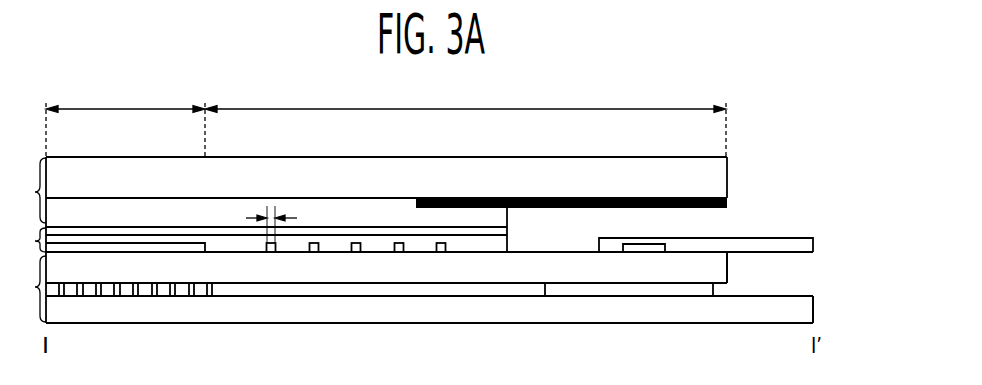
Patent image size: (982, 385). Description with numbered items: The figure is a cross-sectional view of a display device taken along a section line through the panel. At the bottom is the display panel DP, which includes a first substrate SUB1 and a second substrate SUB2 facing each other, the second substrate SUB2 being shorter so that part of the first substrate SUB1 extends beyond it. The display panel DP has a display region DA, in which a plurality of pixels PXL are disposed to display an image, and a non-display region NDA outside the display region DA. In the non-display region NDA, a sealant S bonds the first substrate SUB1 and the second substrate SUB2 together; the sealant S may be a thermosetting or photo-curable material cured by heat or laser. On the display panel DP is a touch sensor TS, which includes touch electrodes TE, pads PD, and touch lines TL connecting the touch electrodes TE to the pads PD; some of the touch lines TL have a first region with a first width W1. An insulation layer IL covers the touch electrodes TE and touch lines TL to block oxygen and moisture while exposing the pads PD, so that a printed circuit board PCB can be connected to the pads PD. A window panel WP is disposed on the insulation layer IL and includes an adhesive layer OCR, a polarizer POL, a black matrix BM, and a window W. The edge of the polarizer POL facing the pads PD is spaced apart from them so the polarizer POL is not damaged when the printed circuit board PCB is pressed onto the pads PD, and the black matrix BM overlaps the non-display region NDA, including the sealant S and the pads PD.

The window panel WP is at (27, 190).
The touch sensor TS is at (27, 241).
The display panel DP is at (27, 289).
The display region DA is at (125, 121).
The non-display region NDA is at (465, 121).
The adhesive layer OCR is at (152, 213).
The first width W1 is at (271, 208).
The polarizer POL is at (357, 231).
The insulation layer IL is at (411, 243).
The pad PD is at (644, 246).
The window W is at (727, 172).
The black matrix BM is at (727, 205).
The printed circuit board PCB is at (813, 245).
The second substrate SUB2 is at (727, 268).
The first substrate SUB1 is at (813, 310).
The touch electrode TE is at (122, 253).
The pixel PXL is at (180, 291).
The touch line TL is at (271, 253).
The sealant S is at (643, 297).